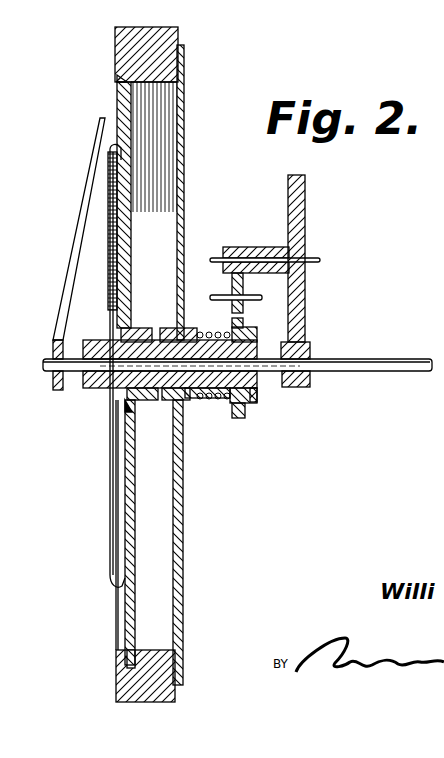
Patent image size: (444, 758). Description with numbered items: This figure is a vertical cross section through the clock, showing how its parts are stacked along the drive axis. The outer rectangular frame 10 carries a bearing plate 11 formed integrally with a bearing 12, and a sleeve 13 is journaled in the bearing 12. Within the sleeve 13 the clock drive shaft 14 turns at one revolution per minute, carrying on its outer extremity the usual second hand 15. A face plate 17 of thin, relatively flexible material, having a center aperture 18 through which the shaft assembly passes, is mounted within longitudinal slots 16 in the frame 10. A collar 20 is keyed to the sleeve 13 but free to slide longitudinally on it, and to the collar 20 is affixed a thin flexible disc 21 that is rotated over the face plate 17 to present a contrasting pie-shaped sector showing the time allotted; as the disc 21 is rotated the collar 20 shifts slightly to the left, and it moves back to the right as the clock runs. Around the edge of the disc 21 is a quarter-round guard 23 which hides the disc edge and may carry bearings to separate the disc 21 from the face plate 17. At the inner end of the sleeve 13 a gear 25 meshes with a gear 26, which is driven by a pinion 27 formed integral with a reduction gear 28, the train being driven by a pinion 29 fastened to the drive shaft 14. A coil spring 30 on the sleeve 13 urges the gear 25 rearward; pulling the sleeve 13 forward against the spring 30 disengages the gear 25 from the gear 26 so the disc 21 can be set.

The outer rectangular frame 10 is at (143, 13).
The bearing plate 11 is at (184, 538).
The bearing 12 is at (192, 400).
The sleeve 13 is at (104, 388).
The clock drive shaft 14 is at (406, 372).
The second hand 15 is at (75, 280).
The longitudinal slots 16 is at (118, 76).
The face plate 17 is at (126, 612).
The center aperture 18 is at (121, 316).
The collar 20 is at (144, 328).
The disc 21 is at (122, 512).
The quarter-round guard 23 is at (115, 585).
The gear 25 is at (256, 404).
The gear 26 is at (232, 284).
The pinion 27 is at (247, 247).
The reduction gear 28 is at (305, 312).
The pinion 29 is at (310, 382).
The coil spring 30 is at (209, 400).